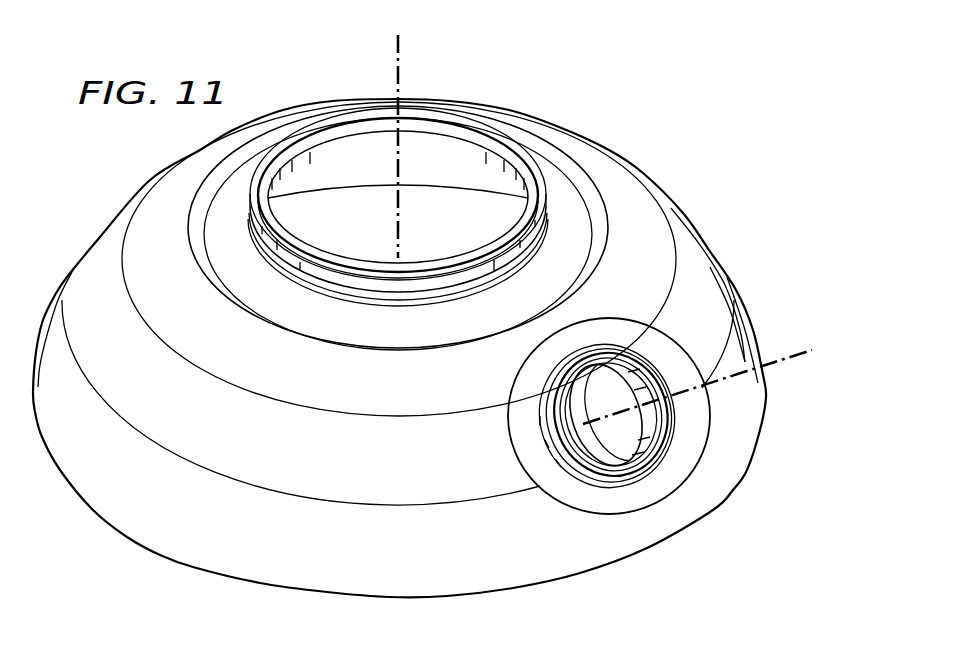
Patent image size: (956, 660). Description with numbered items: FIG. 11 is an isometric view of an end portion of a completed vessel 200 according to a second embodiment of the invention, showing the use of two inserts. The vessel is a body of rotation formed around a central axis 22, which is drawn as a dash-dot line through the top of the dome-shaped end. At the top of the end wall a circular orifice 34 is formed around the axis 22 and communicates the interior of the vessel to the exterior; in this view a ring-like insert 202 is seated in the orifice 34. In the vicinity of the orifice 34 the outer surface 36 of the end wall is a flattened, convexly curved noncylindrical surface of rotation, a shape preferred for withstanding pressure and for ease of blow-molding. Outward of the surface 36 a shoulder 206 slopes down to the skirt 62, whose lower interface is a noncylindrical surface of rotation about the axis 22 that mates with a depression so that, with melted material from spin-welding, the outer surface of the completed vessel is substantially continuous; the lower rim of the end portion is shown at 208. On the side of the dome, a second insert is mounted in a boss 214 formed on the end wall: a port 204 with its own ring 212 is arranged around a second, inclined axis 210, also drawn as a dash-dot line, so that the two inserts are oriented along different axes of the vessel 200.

The axis 22 is at (396, 47).
The orifice 34 is at (336, 174).
The outer surface 36 is at (570, 169).
The skirt 62 is at (335, 320).
The cover 200 is at (522, 71).
The ring 202 is at (447, 118).
The port 204 is at (545, 406).
The shoulder 206 is at (628, 193).
The skirt 208 is at (175, 547).
The port axis 210 is at (812, 350).
The port ring 212 is at (636, 428).
The boss 214 is at (682, 351).